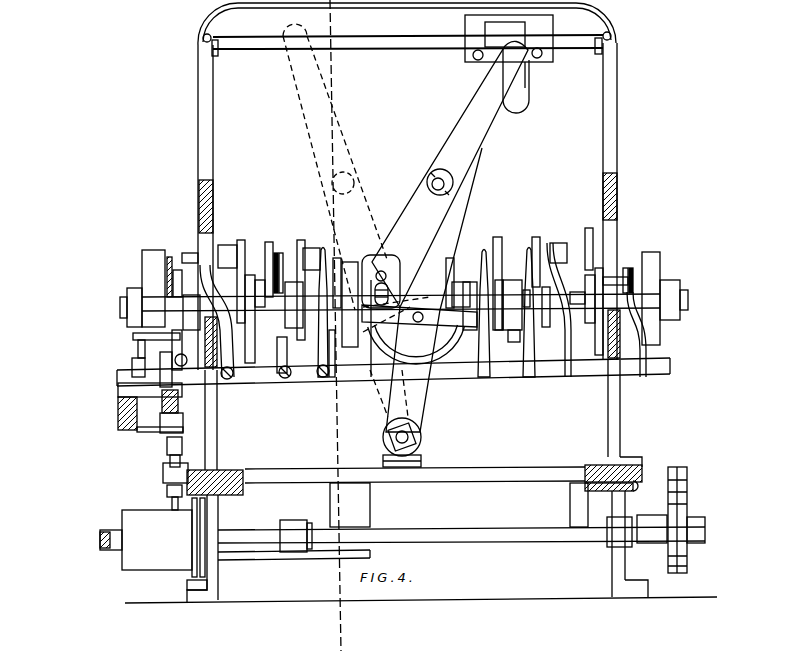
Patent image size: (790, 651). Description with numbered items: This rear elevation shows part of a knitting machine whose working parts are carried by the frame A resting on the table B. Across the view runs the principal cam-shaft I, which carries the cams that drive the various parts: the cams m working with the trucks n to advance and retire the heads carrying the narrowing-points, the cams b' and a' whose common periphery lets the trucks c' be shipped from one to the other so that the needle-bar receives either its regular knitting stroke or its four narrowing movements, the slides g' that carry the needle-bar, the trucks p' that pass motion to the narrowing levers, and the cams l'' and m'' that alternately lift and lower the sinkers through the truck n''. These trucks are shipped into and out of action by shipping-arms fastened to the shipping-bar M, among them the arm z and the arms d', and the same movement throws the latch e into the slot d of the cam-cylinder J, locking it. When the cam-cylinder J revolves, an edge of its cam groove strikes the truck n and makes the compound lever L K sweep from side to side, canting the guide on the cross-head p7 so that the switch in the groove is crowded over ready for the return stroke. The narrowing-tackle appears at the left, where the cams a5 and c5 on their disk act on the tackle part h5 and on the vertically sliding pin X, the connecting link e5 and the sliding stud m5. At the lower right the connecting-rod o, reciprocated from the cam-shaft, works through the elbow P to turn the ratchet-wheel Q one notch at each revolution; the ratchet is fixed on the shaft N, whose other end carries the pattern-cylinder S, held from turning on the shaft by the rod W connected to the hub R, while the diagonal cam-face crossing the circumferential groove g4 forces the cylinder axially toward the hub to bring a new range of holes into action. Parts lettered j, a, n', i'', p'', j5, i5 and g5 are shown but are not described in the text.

The frame A is at (393, 303).
The table B is at (478, 468).
The compound lever L is at (450, 174).
The compound lever K is at (434, 290).
The cam-cylinder J is at (461, 294).
The crank pin block j is at (362, 272).
The shipping-bar M is at (416, 396).
The cross-head p7 is at (419, 316).
The plate a is at (344, 304).
The latch e is at (354, 328).
The cams a' is at (427, 305).
The cam-shaft I is at (399, 303).
The cam a5 is at (158, 245).
The trucks n is at (177, 277).
The connecting-rod o is at (414, 311).
The cams m is at (408, 302).
The strip n' is at (630, 272).
The cams b' is at (406, 291).
The trucks c' is at (415, 271).
The shipping-arms d' is at (387, 310).
The trucks p' is at (416, 258).
The cam m'' is at (407, 292).
The truck n'' is at (404, 280).
The pin i'' is at (409, 313).
The slides g' is at (408, 313).
The plate p'' is at (406, 349).
The slot d is at (335, 283).
The cam l'' is at (511, 342).
The narrowing-tackle part h5 is at (133, 337).
The cam c5 is at (132, 366).
The block j5 is at (165, 369).
The roller i5 is at (185, 353).
The shipping-arm z is at (118, 416).
The vertically-sliding stud m5 is at (178, 404).
The block g5 is at (183, 423).
The connecting link e5 is at (180, 459).
The vertically-sliding stud or pin X is at (170, 500).
The pattern-cylinder S is at (152, 537).
The circumferential groove g4 is at (190, 585).
The shaft N is at (461, 534).
The rod W is at (294, 562).
The hub R is at (296, 536).
The elbow P is at (680, 488).
The ratchet-wheel Q is at (681, 562).